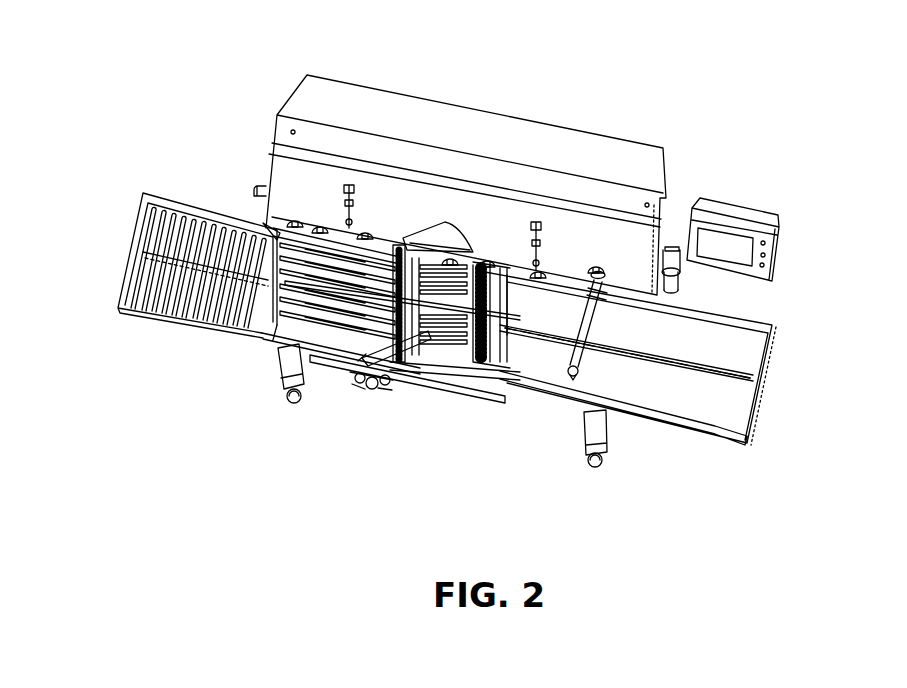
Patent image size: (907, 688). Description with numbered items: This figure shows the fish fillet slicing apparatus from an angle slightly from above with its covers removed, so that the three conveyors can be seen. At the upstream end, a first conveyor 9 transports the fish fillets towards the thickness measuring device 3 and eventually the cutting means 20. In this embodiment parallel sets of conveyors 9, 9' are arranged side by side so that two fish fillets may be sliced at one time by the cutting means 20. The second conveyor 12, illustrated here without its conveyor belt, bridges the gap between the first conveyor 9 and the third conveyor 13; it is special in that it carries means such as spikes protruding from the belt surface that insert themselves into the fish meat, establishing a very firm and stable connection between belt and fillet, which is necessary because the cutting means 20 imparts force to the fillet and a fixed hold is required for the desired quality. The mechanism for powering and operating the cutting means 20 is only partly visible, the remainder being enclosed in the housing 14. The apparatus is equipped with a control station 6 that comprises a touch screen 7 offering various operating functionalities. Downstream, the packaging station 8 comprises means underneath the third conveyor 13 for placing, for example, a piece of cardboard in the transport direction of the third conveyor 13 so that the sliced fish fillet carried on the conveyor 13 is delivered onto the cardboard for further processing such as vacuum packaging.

The housing 14 is at (515, 108).
The control station 6 is at (772, 217).
The touch screen 7 is at (718, 243).
The packaging station 8 is at (178, 277).
The third conveyor 13 is at (307, 312).
The second conveyor 12 is at (445, 330).
The cutting means 20 is at (363, 402).
The first conveyor 9 is at (653, 369).
The first conveyor 9' is at (681, 350).
The thickness measuring device 3 is at (565, 362).